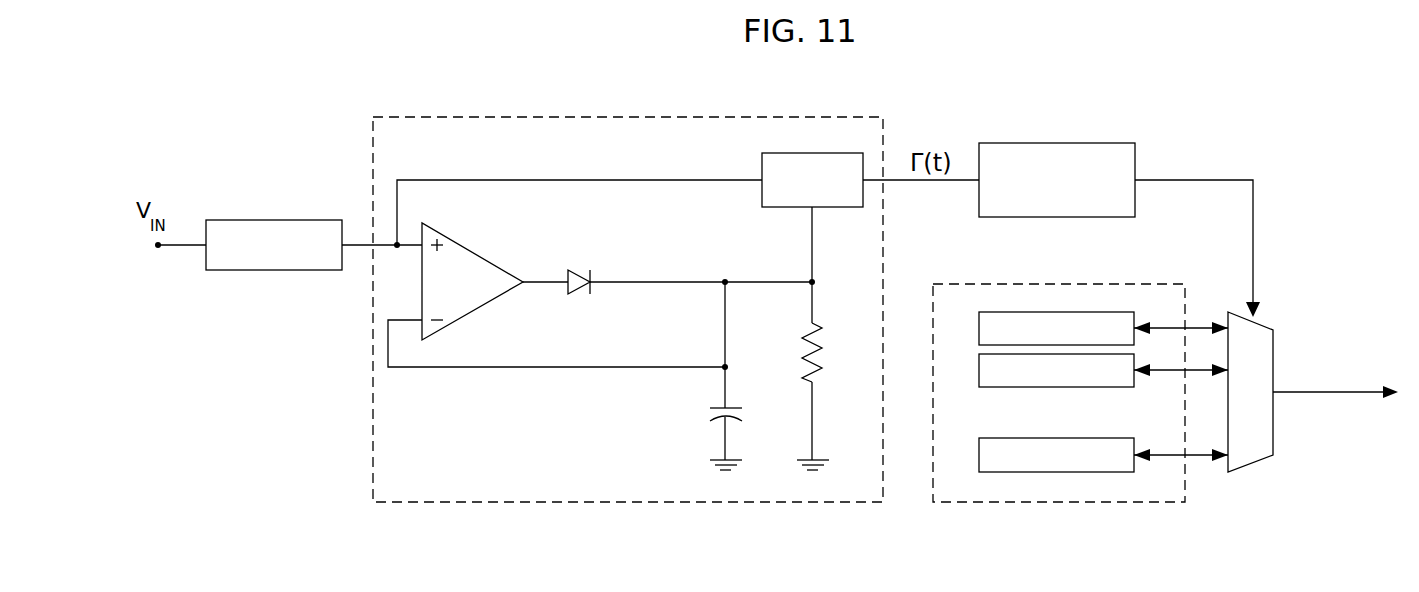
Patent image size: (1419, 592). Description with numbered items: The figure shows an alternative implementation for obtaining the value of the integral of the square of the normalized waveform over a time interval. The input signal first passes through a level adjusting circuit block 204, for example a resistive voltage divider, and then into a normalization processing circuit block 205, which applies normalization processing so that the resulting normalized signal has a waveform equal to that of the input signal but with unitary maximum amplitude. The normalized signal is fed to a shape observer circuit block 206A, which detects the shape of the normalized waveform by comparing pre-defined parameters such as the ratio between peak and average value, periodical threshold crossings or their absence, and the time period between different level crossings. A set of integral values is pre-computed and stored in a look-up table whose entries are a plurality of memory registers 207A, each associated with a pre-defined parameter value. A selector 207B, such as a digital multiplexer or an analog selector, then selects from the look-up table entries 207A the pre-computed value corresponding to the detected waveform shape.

The level adjusting circuit block 204 is at (271, 263).
The normalization processing circuit block 205 is at (398, 467).
The shape observer circuit block 206A is at (1072, 165).
The memory registers 207A is at (1067, 490).
The selector 207B is at (1252, 452).